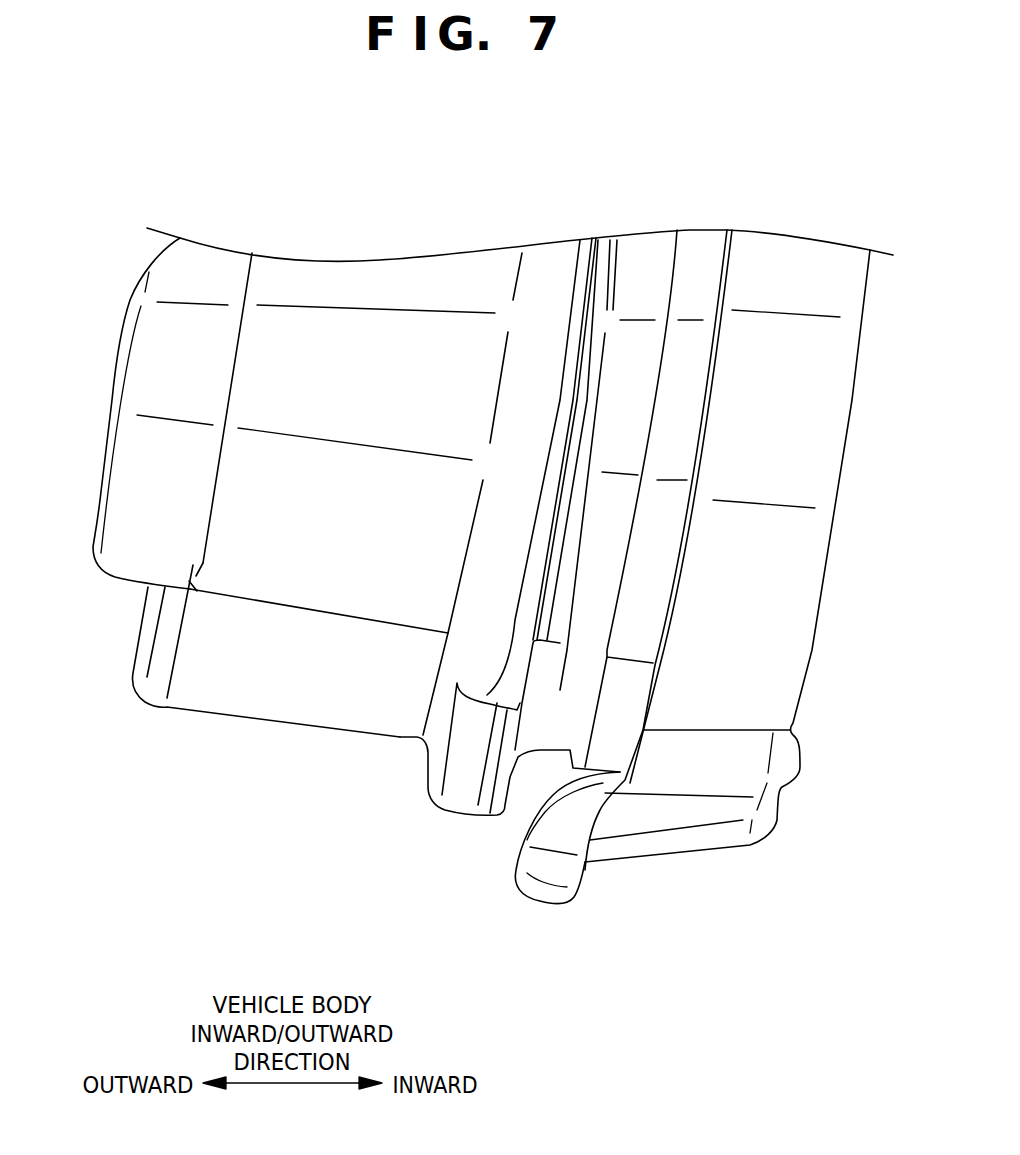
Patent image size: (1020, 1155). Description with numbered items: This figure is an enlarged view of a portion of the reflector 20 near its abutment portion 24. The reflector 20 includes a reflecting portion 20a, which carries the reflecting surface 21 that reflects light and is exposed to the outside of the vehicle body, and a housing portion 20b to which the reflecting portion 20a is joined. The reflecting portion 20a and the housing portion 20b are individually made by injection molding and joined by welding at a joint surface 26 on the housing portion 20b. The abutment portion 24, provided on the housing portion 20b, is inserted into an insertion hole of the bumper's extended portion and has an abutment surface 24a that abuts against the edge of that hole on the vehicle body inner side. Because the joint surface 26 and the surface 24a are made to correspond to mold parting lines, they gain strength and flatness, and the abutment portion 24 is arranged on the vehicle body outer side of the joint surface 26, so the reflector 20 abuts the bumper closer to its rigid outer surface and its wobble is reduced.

The reflector 20 is at (207, 757).
The reflecting portion 20a is at (677, 213).
The housing portion 20b is at (895, 217).
The reflecting surface 21 is at (113, 418).
The abutment portion 24 is at (527, 880).
The abutment surface 24a is at (575, 903).
The joint surface 26 is at (622, 548).